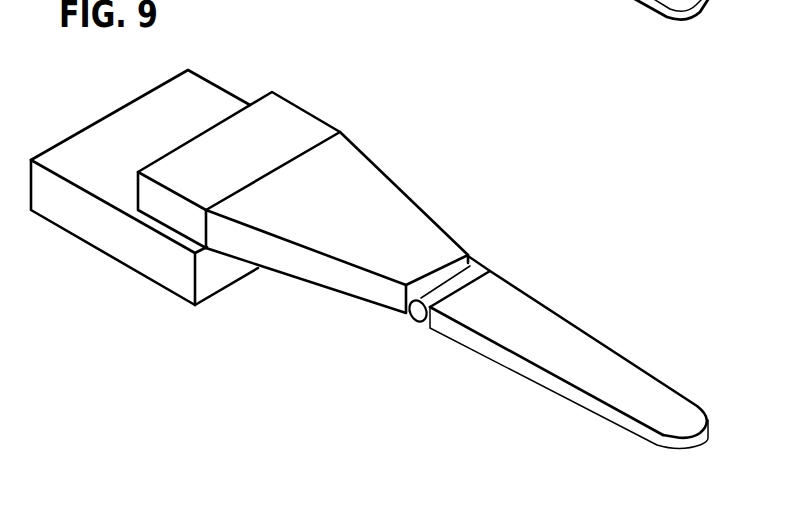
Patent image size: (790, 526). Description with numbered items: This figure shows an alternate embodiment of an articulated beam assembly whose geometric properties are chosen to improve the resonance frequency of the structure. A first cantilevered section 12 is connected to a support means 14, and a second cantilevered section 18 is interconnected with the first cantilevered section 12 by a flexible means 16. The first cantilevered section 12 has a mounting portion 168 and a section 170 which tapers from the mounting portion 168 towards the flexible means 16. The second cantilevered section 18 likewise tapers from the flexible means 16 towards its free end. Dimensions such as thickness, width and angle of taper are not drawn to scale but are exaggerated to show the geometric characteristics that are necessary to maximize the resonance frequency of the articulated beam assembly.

The first cantilevered section 12 is at (303, 202).
The support means 14 is at (119, 158).
The flexible means 16 is at (466, 276).
The second cantilevered section 18 is at (562, 335).
The mounting portion 168 is at (239, 167).
The tapered section 170 is at (350, 227).